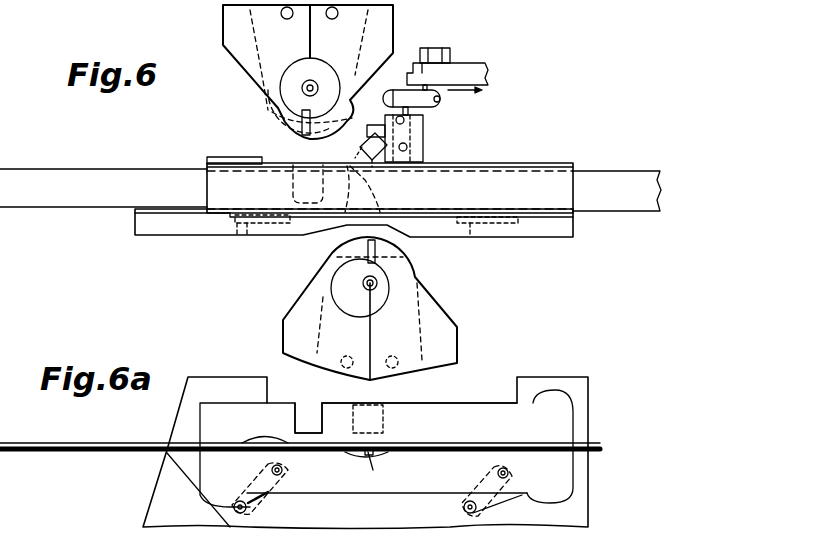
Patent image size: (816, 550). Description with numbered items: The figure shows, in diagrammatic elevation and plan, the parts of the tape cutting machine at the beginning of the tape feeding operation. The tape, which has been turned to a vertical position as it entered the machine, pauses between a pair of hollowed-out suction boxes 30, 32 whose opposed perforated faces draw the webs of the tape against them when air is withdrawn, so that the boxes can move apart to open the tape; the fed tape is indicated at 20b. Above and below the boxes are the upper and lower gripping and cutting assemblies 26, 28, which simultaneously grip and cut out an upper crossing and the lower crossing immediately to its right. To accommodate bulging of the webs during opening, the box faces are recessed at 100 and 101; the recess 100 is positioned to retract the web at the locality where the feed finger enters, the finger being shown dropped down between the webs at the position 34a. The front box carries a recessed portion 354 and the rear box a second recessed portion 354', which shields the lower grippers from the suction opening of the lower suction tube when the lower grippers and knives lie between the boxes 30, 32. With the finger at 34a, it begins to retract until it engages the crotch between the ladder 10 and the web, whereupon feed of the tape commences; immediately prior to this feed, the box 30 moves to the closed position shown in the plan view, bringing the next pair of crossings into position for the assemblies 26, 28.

In FIG. 6, the upper gripping and cutting assembly 26 is at (292, 125).
In FIG. 6, the lower gripping and cutting assembly 28 is at (393, 263).
In FIG. 6, the suction box 30 is at (330, 197).
In FIG. 6A, the suction box 30 is at (365, 453).
In FIG. 6, the stop member 354 is at (356, 150).
In FIG. 6A, the stop member 354 is at (308, 406).
In FIG. 6, the second recessed portion 354' is at (404, 250).
In FIG. 6A, the second recessed portion 354' is at (376, 408).
In FIG. 6A, the ladder 10 is at (383, 443).
In FIG. 6A, the suction box 32 is at (419, 419).
In FIG. 6A, the feed finger position 34a is at (412, 485).
In FIG. 6A, the recess 100 is at (353, 457).
In FIG. 6A, the recess 101 is at (257, 440).
In FIG. 6A, the strip 20b is at (53, 453).